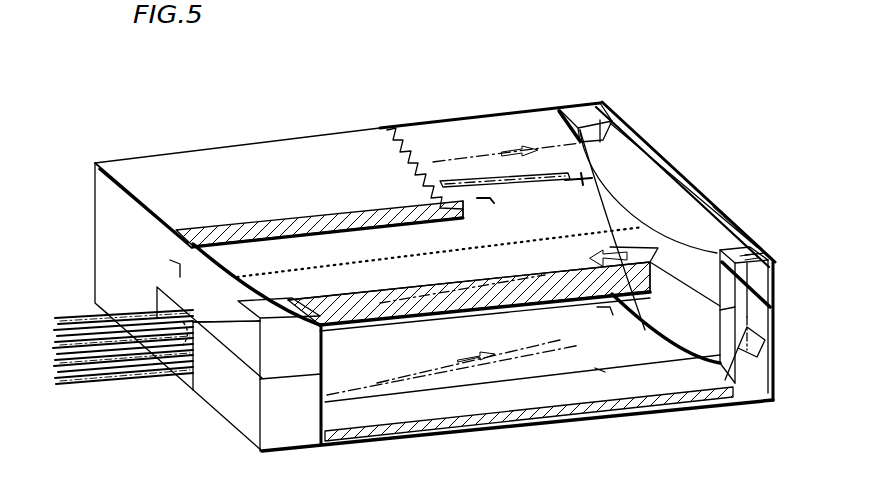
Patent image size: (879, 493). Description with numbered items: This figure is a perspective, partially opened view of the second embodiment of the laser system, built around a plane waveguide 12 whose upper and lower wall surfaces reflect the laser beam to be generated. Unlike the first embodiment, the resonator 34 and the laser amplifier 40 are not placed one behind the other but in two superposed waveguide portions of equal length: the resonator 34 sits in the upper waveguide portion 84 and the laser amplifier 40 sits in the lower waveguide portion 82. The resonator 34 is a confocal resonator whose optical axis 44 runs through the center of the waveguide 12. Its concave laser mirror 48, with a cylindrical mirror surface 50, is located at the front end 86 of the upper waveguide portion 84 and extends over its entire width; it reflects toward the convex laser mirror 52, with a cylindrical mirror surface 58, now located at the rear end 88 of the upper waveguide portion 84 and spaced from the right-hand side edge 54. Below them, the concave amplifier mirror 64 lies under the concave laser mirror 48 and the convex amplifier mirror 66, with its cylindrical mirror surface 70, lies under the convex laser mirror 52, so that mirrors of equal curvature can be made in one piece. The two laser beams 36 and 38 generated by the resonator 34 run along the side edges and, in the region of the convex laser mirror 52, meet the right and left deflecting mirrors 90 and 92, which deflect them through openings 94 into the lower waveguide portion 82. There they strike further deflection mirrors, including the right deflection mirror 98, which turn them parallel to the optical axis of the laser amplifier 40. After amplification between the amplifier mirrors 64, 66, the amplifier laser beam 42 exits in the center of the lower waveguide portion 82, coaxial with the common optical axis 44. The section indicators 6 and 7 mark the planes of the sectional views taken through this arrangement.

The plane waveguide 12 is at (302, 124).
The resonator 34 is at (390, 240).
The laser beam 36 is at (463, 152).
The laser beam 38 is at (468, 316).
The laser amplifier 40 is at (613, 381).
The amplifier laser beam 42 is at (92, 372).
The optical axis 44 is at (430, 252).
The concave laser mirror 48 is at (277, 292).
The cylindrical mirror surface 50 is at (228, 262).
The convex laser mirror 52 is at (712, 212).
The right-hand side edge 54 is at (500, 123).
The cylindrical mirror surface 58 is at (612, 203).
The concave amplifier mirror 64 is at (262, 450).
The convex amplifier mirror 66 is at (765, 398).
The cylindrical mirror surface 70 is at (697, 320).
The lower waveguide portion 82 is at (232, 399).
The upper waveguide portion 84 is at (230, 334).
The front end 86 is at (102, 183).
The rear end 88 is at (637, 140).
The right deflecting mirror 90 is at (583, 108).
The left deflecting mirror 92 is at (760, 256).
The openings 94 is at (565, 178).
The right deflection mirror 98 is at (757, 343).
The section line 6- 6 is at (75, 179).
The section line 7- 7 is at (107, 245).